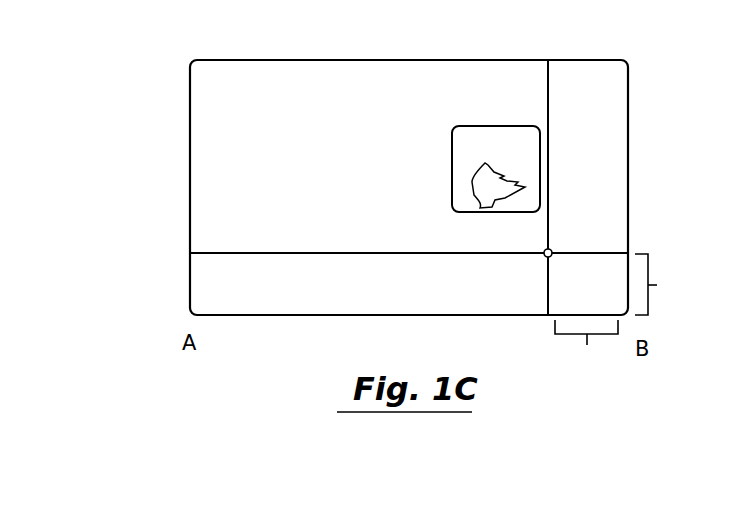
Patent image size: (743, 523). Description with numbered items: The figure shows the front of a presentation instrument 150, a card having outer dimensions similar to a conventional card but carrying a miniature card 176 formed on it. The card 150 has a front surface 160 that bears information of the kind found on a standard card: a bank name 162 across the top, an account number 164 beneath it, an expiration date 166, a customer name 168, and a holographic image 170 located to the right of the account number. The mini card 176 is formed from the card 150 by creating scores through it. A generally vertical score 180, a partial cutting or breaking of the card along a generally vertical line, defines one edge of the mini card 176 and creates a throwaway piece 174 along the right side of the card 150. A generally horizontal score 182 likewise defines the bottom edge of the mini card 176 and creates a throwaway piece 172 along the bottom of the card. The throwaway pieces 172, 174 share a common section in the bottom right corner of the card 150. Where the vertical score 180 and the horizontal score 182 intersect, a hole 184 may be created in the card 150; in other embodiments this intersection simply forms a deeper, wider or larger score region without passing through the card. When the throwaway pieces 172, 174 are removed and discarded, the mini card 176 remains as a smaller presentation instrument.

The presentation instrument 150 is at (174, 122).
The front surface 160 is at (305, 300).
The bank name 162 is at (217, 82).
The account number 164 is at (205, 147).
The expiration date 166 is at (241, 182).
The customer name 168 is at (197, 230).
The holographic image 170 is at (516, 120).
The throwaway piece 172 is at (672, 284).
The throwaway piece 174 is at (586, 346).
The miniature card 176 is at (403, 48).
The vertical score 180 is at (547, 284).
The horizontal score 182 is at (600, 253).
The hole 184 is at (554, 248).